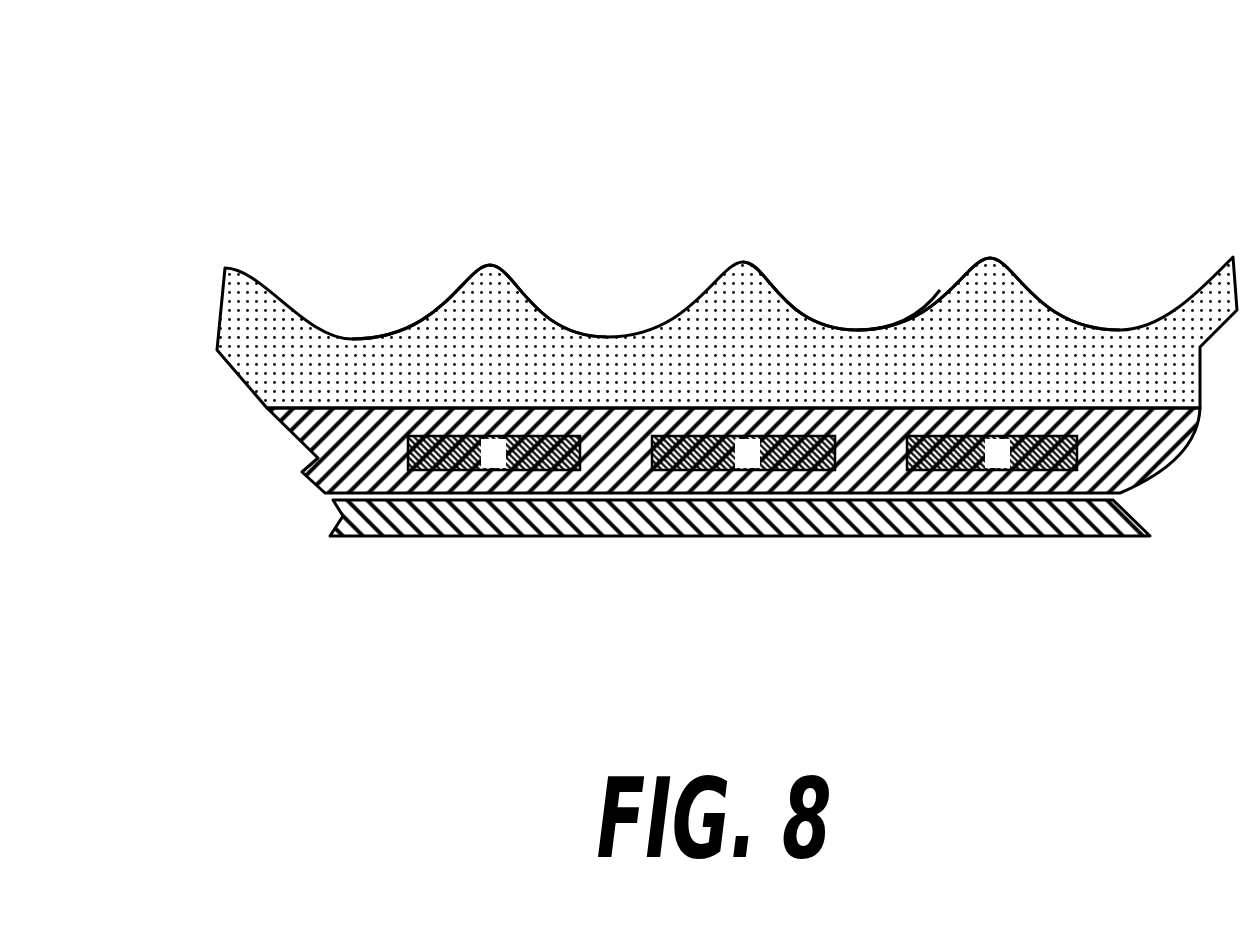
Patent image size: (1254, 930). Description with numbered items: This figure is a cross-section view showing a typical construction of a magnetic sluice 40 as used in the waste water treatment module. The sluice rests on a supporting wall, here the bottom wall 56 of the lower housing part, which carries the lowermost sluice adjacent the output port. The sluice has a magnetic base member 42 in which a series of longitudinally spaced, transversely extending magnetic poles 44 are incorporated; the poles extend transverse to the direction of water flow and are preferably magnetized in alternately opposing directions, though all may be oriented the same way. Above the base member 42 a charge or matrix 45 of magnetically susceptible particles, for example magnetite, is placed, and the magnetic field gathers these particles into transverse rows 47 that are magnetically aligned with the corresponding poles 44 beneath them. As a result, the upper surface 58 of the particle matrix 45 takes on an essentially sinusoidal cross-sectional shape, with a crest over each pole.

The magnetic sluice 40 is at (576, 135).
The magnetic base member 42 is at (307, 475).
The magnetic poles 44 is at (753, 472).
The matrix of magnetically susceptible particles 45 is at (640, 348).
The transverse rows of particles 47 is at (485, 282).
The bottom wall 56 is at (553, 540).
The upper surface of particle matrix 58 is at (846, 322).